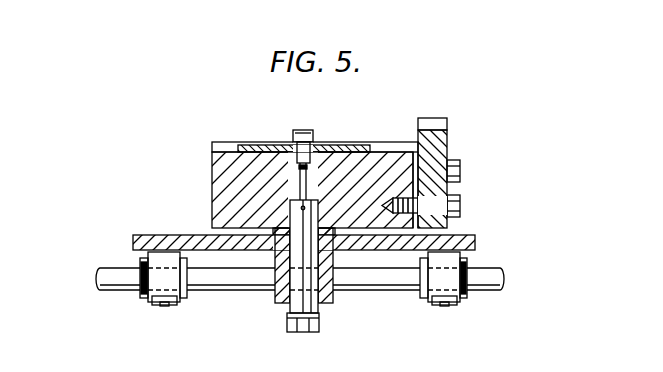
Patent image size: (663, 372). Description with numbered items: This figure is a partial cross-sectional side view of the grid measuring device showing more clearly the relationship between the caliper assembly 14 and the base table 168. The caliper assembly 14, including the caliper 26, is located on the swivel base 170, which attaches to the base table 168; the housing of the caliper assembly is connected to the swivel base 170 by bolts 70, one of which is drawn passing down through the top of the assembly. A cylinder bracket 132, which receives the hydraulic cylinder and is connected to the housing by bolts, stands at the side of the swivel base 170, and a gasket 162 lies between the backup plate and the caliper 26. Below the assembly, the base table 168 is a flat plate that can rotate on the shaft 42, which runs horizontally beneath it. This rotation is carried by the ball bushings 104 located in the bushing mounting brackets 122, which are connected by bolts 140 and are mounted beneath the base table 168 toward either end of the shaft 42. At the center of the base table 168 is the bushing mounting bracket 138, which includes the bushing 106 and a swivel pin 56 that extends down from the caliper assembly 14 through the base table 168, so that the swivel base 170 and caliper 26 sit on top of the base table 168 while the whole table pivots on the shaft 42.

The caliper assembly 14 is at (366, 107).
The caliper 26 is at (262, 145).
The shaft 42 is at (119, 272).
The swivel pin 56 is at (296, 332).
The bolts 70 is at (320, 112).
The ball bushings 104 is at (143, 295).
The bushing 106 is at (320, 313).
The bushing mounting brackets 122 is at (163, 304).
The cylinder bracket 132 is at (440, 126).
The bushing mounting bracket 138 is at (276, 292).
The bolts 140 is at (170, 304).
The gasket 162 is at (413, 152).
The base table 168 is at (153, 240).
The swivel base 170 is at (212, 150).